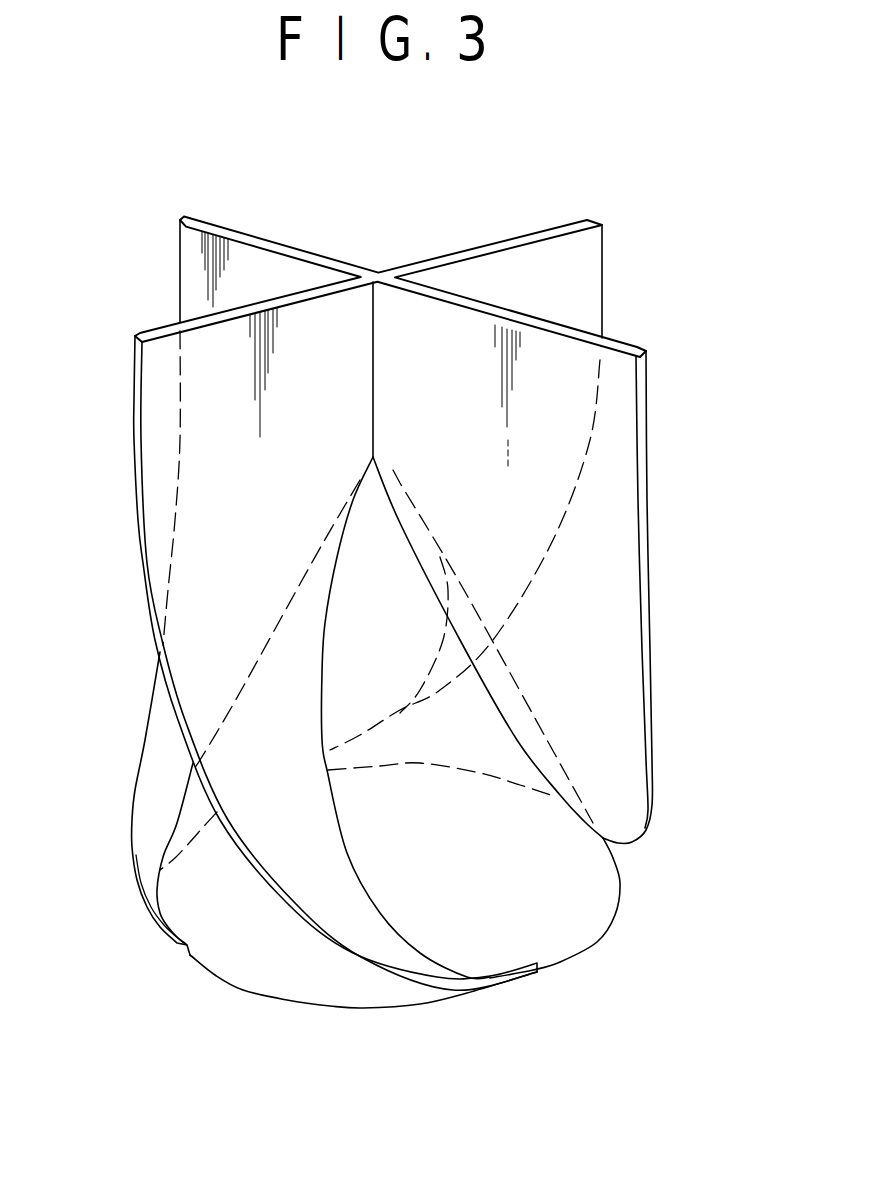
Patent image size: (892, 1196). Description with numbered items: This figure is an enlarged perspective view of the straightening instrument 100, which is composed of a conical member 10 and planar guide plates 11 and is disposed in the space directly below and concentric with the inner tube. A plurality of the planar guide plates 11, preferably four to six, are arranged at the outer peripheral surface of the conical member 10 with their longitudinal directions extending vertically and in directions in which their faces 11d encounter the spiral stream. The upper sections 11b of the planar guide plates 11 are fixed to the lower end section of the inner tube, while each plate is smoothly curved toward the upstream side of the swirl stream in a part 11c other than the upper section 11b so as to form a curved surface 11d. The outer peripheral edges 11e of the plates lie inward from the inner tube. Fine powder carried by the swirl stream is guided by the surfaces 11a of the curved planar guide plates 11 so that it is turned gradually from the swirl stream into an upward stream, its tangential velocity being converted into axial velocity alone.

The straightening instrument 100 is at (662, 354).
The planar guide plates 11 is at (434, 260).
The conical member 10 is at (397, 552).
The surfaces of the curved planar guide plates 11a is at (243, 400).
The upper sections 11b is at (225, 345).
The part other than the upper section 11c is at (227, 538).
The curved surface 11d is at (257, 723).
The outer peripheral edges 11e is at (133, 488).